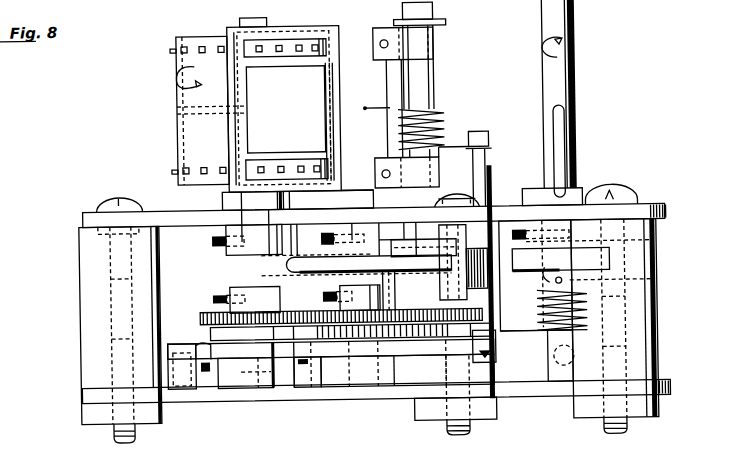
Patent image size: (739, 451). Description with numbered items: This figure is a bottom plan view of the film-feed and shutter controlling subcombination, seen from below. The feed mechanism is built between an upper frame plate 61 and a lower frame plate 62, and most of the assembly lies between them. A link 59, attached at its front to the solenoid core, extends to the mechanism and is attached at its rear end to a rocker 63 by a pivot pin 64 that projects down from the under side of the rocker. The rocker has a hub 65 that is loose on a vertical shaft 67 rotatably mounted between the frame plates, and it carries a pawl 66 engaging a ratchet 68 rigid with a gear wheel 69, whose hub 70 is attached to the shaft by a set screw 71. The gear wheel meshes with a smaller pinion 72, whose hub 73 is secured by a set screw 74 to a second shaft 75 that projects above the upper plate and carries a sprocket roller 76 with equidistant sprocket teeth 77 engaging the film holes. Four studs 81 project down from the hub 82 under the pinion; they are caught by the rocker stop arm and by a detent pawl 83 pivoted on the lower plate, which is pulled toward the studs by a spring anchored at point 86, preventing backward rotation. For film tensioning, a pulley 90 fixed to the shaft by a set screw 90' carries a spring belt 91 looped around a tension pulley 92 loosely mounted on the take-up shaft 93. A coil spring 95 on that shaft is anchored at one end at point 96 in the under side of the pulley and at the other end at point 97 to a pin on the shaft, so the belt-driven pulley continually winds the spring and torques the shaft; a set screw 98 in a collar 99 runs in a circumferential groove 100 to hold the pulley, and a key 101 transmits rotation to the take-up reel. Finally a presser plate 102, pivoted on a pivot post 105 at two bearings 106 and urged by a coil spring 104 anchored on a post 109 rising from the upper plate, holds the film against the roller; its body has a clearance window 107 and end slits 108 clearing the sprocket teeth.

The link 59 is at (292, 356).
The upper frame plate 61 is at (501, 207).
The lower frame plate 62 is at (532, 390).
The rocker 63 is at (367, 349).
The pivot pin 64 is at (312, 365).
The hub 65 is at (393, 374).
The pawl 66 is at (443, 327).
The vertical shaft 67 is at (388, 278).
The ratchet 68 is at (375, 328).
The gear wheel 69 is at (492, 355).
The hub 70 is at (338, 288).
The set screw 71 is at (324, 297).
The pinion 72 is at (204, 306).
The hub 73 is at (272, 306).
The set screw 74 is at (221, 292).
The shaft 75 is at (250, 262).
The sprocket roller 76 is at (192, 44).
The sprocket teeth 77 is at (223, 44).
The studs 81 is at (262, 357).
The hub 82 is at (211, 333).
The detent pawl 83 is at (219, 352).
The anchor point 86 is at (207, 356).
The pulley 90 is at (316, 239).
The set screw 90' is at (388, 223).
The spring belt 91 is at (543, 299).
The tension pulley 92 is at (653, 245).
The shaft 93 is at (571, 86).
The coil spring 95 is at (534, 322).
The anchor point 96 is at (653, 283).
The anchor point 97 is at (558, 381).
The set screw 98 is at (520, 230).
The collar 99 is at (551, 230).
The circumferential groove 100 is at (554, 281).
The key 101 is at (563, 145).
The presser plate 102 is at (384, 95).
The coil spring 104 is at (444, 118).
The pivot post 105 is at (430, 83).
The bearings 106 is at (442, 50).
The clearance window 107 is at (298, 148).
The slits 108 is at (307, 40).
The post 109 is at (489, 160).